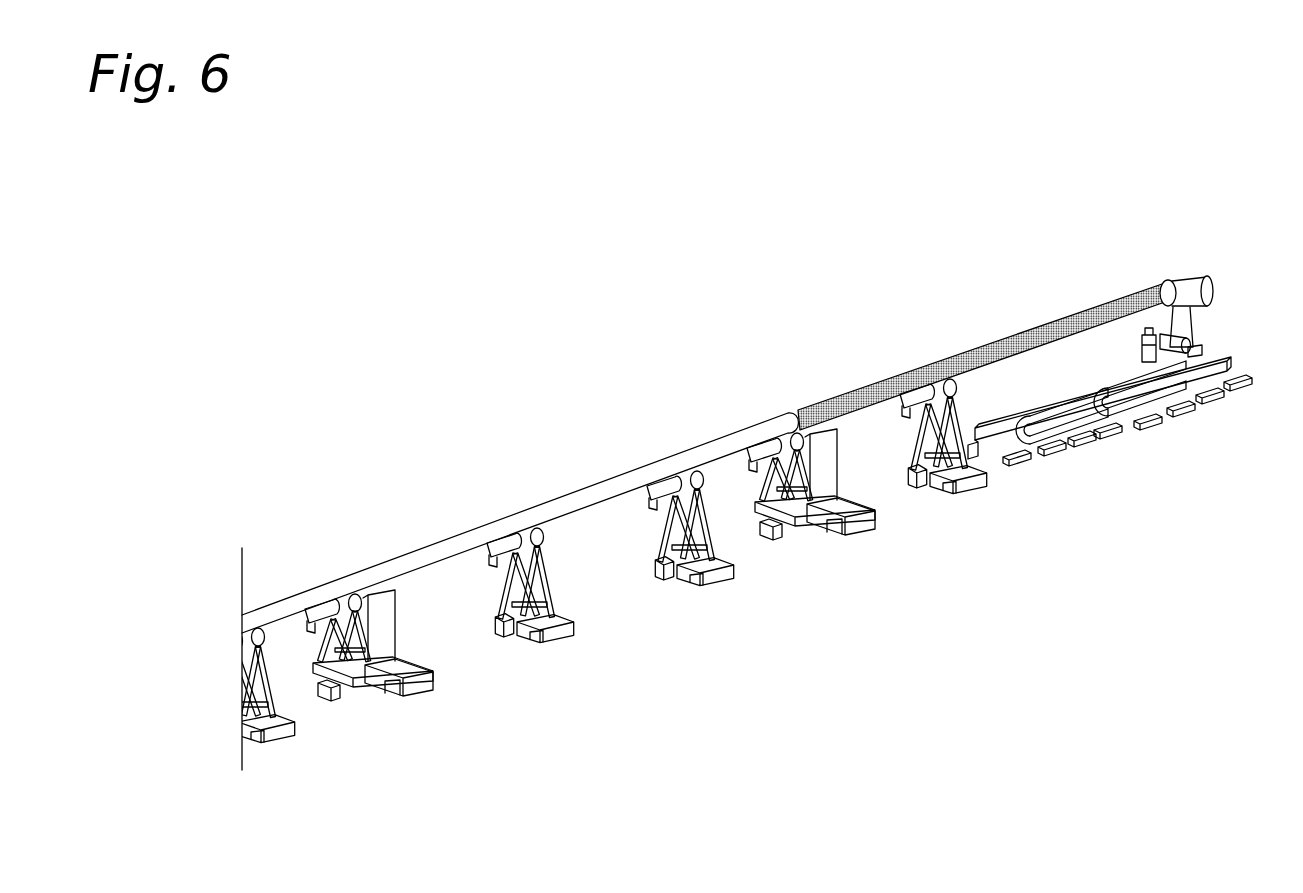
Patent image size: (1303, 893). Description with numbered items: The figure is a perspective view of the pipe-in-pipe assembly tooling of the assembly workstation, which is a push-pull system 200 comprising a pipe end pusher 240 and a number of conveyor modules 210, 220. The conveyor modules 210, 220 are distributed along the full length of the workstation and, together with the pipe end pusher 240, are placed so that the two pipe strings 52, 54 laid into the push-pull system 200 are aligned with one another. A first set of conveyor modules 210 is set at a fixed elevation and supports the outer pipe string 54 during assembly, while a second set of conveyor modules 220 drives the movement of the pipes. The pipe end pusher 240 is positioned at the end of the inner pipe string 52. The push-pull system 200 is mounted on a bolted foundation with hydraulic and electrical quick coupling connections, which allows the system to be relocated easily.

The push-pull system 200 is at (865, 287).
The inner pipe string 52 is at (956, 357).
The outer pipe string 54 is at (580, 497).
The conveyor modules 210 is at (279, 735).
The conveyor modules 220 is at (420, 685).
The pipe end pusher 240 is at (1212, 400).